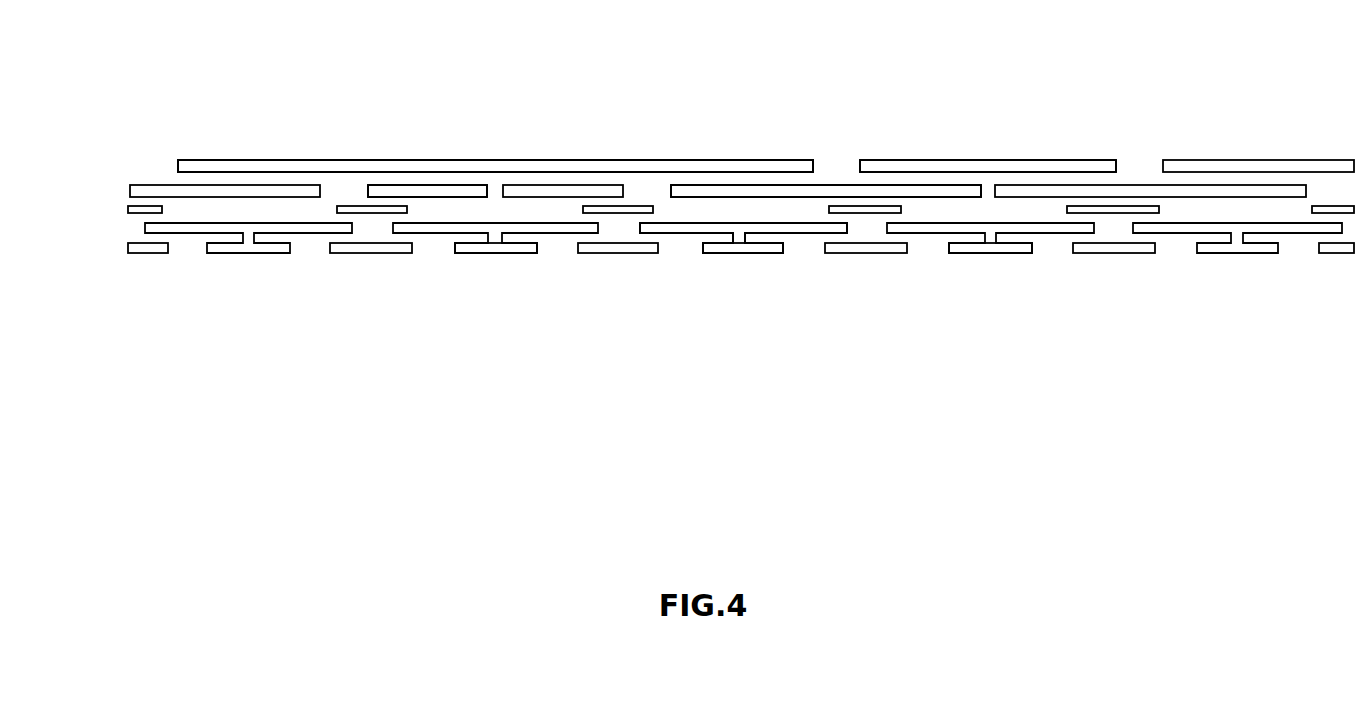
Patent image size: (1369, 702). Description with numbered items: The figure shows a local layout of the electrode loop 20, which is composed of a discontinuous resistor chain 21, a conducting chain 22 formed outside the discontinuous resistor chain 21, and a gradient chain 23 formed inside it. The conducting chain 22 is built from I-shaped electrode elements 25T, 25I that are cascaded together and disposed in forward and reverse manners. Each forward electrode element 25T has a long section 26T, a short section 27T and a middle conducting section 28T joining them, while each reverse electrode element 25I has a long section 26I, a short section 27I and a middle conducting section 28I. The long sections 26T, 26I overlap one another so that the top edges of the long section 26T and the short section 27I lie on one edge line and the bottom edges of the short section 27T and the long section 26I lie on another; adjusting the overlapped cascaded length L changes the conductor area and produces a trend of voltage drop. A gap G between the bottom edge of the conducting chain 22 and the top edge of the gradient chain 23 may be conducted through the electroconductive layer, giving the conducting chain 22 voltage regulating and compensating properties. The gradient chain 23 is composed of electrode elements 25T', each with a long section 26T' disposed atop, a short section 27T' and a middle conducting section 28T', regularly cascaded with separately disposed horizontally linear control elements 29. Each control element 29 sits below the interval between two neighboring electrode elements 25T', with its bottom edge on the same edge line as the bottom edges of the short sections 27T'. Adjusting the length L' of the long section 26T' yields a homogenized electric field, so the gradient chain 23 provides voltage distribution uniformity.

The electrode loop 20 is at (172, 156).
The discontinuous resistor chain 21 is at (128, 208).
The conducting chain 22 is at (258, 157).
The gradient chain 23 is at (125, 248).
The electrode element 25T is at (495, 109).
The long section 26T is at (563, 122).
The short section 27T is at (395, 134).
The middle conducting section 28T is at (427, 132).
The electrode element 25I is at (992, 158).
The long section 26I is at (840, 187).
The short section 27I is at (908, 160).
The middle conducting section 28I is at (977, 180).
The electrode element 25T' is at (762, 299).
The long section 26T' is at (651, 293).
The short section 27T' is at (836, 295).
The middle conducting section 28T' is at (743, 295).
The control element 29 is at (620, 255).
The gap G is at (310, 160).
The overlapped cascaded length L is at (743, 123).
The length L' is at (495, 273).